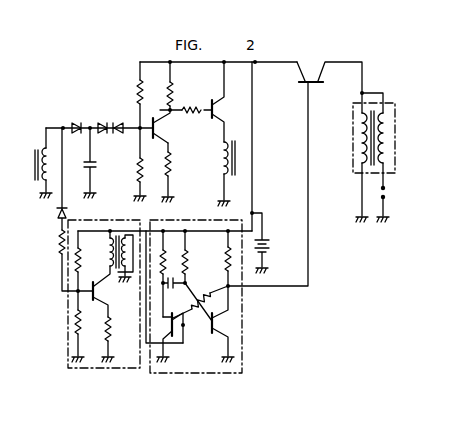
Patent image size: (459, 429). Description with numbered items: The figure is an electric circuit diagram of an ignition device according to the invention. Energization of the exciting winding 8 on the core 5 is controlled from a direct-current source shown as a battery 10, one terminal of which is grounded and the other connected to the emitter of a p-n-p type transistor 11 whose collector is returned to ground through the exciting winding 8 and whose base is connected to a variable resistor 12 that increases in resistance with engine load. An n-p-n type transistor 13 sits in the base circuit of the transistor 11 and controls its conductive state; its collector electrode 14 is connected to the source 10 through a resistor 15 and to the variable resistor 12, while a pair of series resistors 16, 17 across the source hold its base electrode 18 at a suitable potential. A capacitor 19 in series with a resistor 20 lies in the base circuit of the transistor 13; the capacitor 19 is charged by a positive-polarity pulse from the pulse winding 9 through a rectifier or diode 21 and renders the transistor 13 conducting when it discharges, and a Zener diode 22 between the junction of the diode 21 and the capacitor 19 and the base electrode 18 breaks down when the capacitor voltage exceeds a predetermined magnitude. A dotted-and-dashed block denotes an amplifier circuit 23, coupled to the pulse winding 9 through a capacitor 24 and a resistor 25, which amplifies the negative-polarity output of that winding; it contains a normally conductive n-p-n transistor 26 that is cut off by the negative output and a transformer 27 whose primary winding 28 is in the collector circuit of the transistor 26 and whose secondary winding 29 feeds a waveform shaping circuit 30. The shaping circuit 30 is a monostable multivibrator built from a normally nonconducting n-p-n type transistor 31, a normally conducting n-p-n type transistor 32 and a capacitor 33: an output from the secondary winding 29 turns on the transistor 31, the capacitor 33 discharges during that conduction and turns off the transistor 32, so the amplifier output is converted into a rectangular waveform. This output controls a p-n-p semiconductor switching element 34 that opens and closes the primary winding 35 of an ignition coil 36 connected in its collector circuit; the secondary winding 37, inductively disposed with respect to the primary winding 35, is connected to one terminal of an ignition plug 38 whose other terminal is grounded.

The core 5 is at (34, 153).
The exciting winding 8 is at (222, 158).
The pulse winding 9 is at (48, 153).
The battery 10 is at (268, 246).
The p-n-p type transistor 11 is at (225, 114).
The variable resistor 12 is at (197, 108).
The n-p-n type transistor 13 is at (168, 135).
The collector electrode 14 is at (158, 110).
The resistor 15 is at (172, 87).
The resistor 16 is at (137, 91).
The resistor 17 is at (136, 169).
The base electrode 18 is at (163, 145).
The capacitor 19 is at (93, 168).
The resistor 20 is at (172, 166).
The rectifier or diode 21 is at (77, 122).
The Zener diode 22 is at (113, 122).
The amplifier circuit 23 is at (97, 370).
The capacitor 24 is at (57, 213).
The resistor 25 is at (57, 244).
The n-p-n transistor 26 is at (122, 299).
The transformer 27 is at (102, 249).
The primary winding 28 is at (110, 228).
The secondary winding 29 is at (131, 233).
The waveform shaping circuit 30 is at (200, 374).
The n-p-n type transistor 31 is at (179, 322).
The n-p-n type transistor 32 is at (207, 296).
The capacitor 33 is at (174, 274).
The semiconductor switching element 34 is at (319, 62).
The primary winding 35 is at (358, 132).
The ignition coil 36 is at (395, 108).
The secondary winding 37 is at (388, 142).
The ignition plug 38 is at (387, 196).